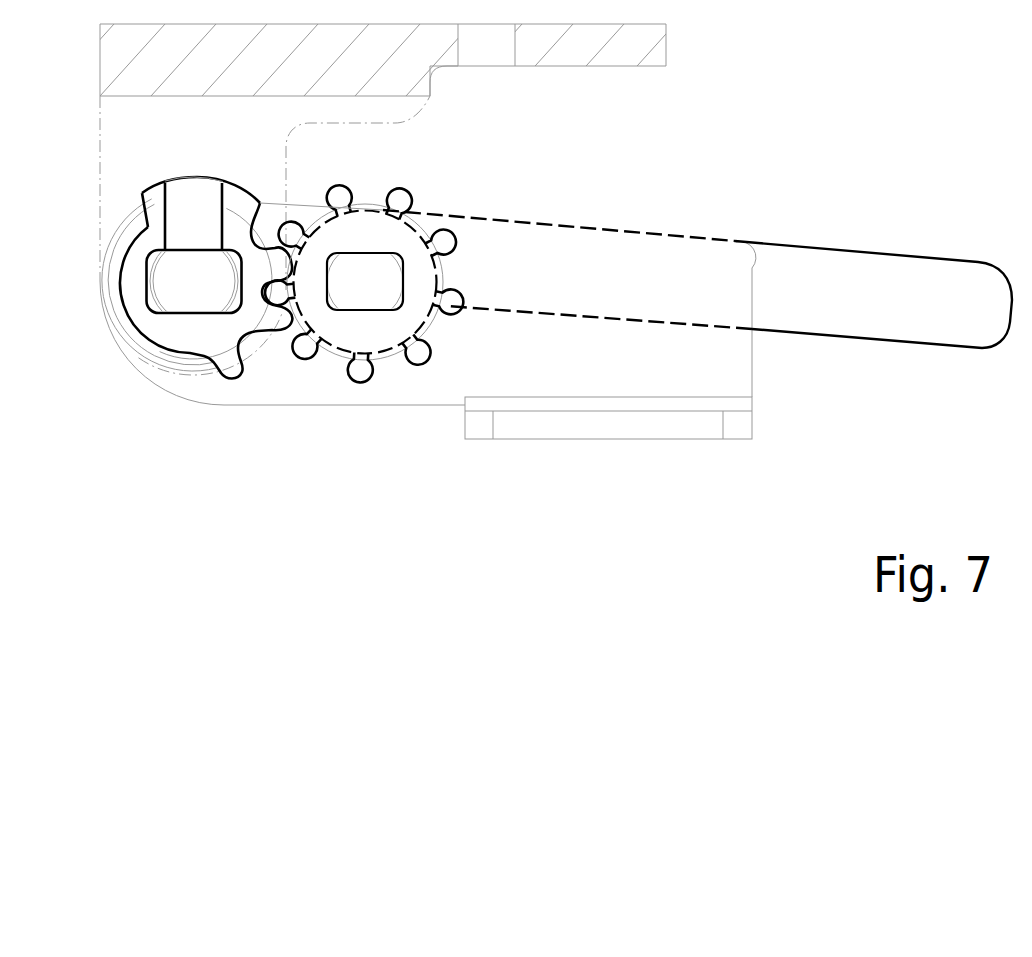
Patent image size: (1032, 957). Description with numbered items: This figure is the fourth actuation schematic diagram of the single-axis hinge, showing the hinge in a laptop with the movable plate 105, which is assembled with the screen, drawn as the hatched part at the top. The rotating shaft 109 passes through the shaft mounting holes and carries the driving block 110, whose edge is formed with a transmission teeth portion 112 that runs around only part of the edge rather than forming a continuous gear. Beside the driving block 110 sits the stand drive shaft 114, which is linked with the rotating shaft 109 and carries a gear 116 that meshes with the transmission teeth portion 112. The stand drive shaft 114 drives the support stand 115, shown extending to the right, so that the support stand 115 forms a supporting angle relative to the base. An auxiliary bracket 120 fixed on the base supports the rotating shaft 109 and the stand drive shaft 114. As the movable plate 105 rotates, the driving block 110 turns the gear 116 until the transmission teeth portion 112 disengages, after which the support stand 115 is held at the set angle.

The movable plate 105 is at (666, 42).
The rotating shaft 109 is at (190, 273).
The driving block 110 is at (168, 328).
The transmission teeth portion 112 is at (243, 347).
The stand drive shaft 114 is at (360, 290).
The support stand 115 is at (908, 268).
The gear 116 is at (413, 250).
The auxiliary bracket 120 is at (752, 371).